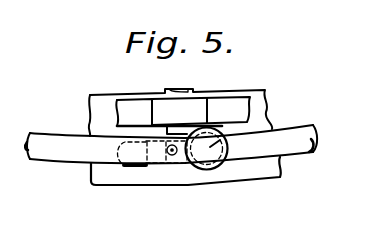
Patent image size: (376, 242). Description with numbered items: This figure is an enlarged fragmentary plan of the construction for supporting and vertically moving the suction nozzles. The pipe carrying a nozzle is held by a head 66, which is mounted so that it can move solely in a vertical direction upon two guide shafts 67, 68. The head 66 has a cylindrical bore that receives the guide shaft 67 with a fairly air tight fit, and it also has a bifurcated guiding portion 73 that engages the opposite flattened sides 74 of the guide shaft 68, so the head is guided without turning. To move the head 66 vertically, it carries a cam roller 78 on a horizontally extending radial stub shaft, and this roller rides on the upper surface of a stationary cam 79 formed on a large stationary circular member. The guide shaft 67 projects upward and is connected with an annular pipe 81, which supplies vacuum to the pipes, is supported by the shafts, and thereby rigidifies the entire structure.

The head 66 is at (207, 170).
The guide shaft 67 is at (225, 139).
The guide shaft 68 is at (112, 160).
The bifurcated guiding portion 73 is at (150, 160).
The flattened sides 74 is at (123, 140).
The cam roller 78 is at (195, 108).
The stationary cam 79 is at (127, 111).
The annular pipe 81 is at (296, 153).